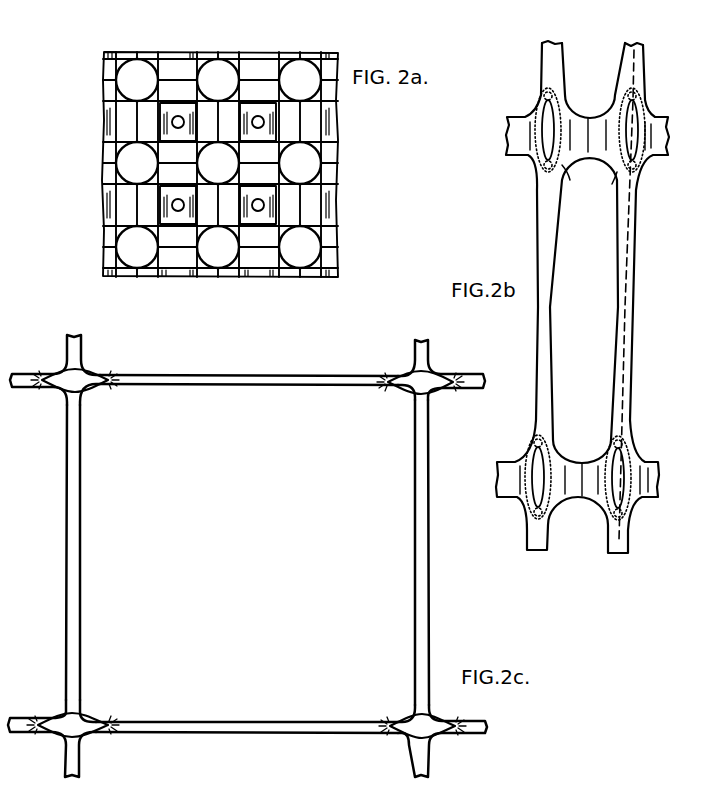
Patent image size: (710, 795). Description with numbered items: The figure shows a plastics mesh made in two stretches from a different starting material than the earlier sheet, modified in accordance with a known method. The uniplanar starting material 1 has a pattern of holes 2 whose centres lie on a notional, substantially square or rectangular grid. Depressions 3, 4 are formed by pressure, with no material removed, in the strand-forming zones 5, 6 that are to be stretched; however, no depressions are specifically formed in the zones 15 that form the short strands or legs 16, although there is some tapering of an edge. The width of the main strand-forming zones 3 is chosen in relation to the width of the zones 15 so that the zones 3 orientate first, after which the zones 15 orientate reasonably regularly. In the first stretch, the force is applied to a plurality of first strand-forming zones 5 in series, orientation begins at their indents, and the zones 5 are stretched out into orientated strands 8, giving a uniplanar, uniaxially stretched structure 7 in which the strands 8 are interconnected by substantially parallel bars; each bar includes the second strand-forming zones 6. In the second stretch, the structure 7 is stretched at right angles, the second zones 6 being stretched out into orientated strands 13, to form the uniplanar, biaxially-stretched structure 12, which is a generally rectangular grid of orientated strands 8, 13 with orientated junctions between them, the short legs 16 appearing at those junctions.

In FIG. 2a, the uniplanar starting material 1 is at (246, 283).
In FIG. 2a, the holes 2 is at (170, 205).
In FIG. 2a, the depression 3 is at (270, 178).
In FIG. 2a, the depression 4 is at (313, 130).
In FIG. 2b, the depression 4 is at (578, 130).
In FIG. 2a, the first strand-forming zone 5 is at (168, 77).
In FIG. 2a, the second strand-forming zone 6 is at (133, 198).
In FIG. 2b, the second strand-forming zone 6 is at (594, 128).
In FIG. 2b, the uniaxially stretched structure 7 is at (535, 257).
In FIG. 2b, the orientated strand 8 is at (542, 310).
In FIG. 2c, the orientated strand 8 is at (78, 508).
In FIG. 2c, the biaxially-stretched structure 12 is at (58, 360).
In FIG. 2c, the orientated strand 13 is at (232, 384).
In FIG. 2a, the zone 15 is at (172, 101).
In FIG. 2b, the short strand or leg 16 is at (617, 172).
In FIG. 2c, the short strand or leg 16 is at (400, 396).